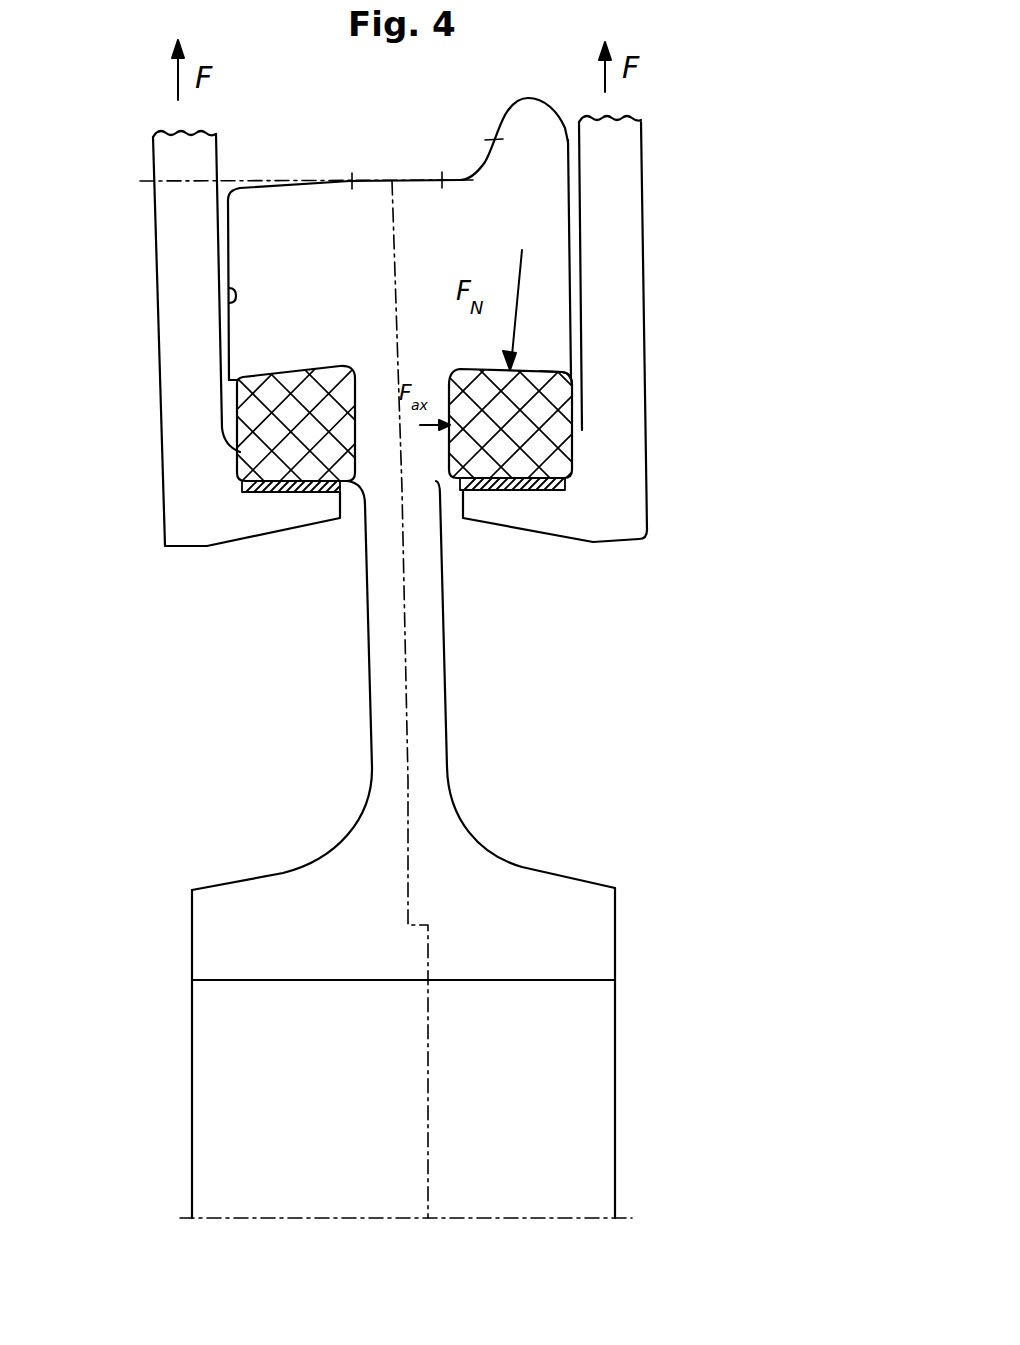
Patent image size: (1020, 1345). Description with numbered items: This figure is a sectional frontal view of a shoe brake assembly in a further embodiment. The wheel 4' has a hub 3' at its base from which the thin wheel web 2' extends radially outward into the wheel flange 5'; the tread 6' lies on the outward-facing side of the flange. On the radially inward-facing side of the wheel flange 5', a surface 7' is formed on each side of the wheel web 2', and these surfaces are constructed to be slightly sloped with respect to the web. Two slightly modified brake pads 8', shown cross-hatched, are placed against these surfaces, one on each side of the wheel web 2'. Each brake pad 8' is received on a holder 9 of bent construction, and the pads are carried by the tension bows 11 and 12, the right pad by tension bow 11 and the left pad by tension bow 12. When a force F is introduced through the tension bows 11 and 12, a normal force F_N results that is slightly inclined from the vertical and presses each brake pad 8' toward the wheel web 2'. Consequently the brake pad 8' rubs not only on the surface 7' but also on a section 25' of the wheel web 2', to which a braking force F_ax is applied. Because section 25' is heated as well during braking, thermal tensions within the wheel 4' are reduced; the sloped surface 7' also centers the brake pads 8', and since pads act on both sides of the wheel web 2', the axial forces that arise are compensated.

The wheel web 2' is at (403, 685).
The base body 3' is at (455, 1053).
The wheel 4' is at (491, 260).
The wheel flange 5' is at (514, 106).
The flat portion of cover plate 6' is at (408, 130).
The surface 7' is at (641, 363).
The brake pad 8' is at (429, 469).
The holder 9 is at (557, 483).
The tension bow 11 is at (620, 278).
The tension bow 12 is at (190, 316).
The section of the wheel web 25' is at (482, 523).